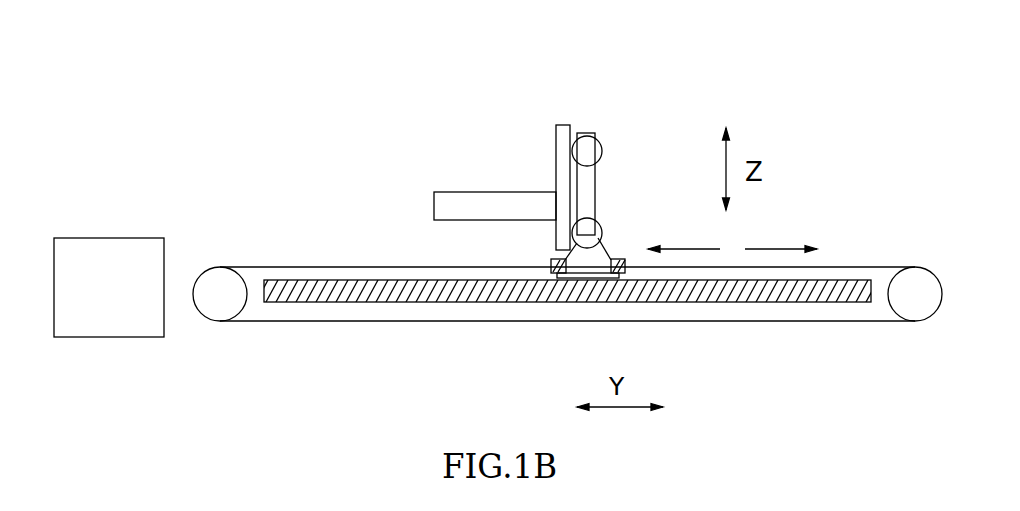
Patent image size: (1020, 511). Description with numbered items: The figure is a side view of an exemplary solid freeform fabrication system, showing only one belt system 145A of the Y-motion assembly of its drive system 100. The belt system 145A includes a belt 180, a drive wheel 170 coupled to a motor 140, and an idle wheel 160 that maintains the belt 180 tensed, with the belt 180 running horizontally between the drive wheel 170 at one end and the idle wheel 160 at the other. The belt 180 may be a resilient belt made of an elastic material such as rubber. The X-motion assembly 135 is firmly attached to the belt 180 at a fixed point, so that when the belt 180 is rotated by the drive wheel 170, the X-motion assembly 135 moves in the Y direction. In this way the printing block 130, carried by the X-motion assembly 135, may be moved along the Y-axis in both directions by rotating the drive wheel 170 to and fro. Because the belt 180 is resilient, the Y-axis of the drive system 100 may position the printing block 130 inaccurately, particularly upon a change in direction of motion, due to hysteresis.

The drive system 100 is at (705, 88).
The printing block 130 is at (462, 192).
The X-motion assembly 135 is at (599, 190).
The motor 140 is at (88, 238).
The belt system 145A is at (496, 334).
The idle wheel 160 is at (935, 268).
The drive wheel 170 is at (205, 270).
The belt 180 is at (297, 322).